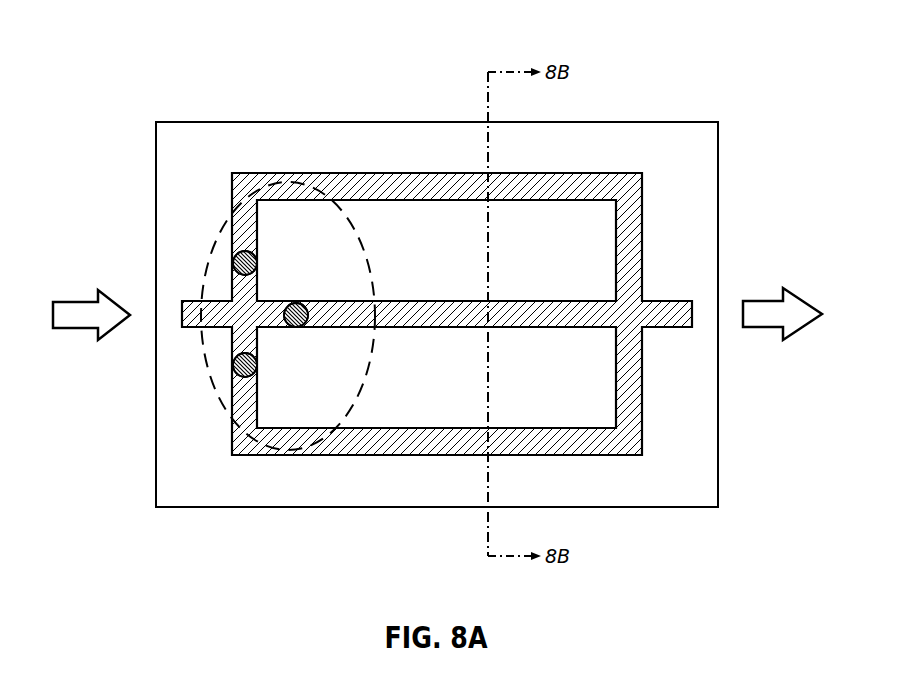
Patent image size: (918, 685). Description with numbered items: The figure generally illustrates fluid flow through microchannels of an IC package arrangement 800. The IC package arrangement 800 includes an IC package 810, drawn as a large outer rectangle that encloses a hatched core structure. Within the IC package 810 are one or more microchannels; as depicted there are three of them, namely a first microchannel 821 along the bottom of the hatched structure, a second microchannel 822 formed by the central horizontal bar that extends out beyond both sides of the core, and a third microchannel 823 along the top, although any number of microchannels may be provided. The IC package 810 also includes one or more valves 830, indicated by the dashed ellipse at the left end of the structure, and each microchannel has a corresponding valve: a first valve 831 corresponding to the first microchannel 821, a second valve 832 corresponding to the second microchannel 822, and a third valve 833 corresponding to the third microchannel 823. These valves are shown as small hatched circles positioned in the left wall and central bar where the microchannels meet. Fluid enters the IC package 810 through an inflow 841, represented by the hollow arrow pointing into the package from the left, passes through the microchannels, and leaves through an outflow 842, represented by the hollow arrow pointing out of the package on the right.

The IC package arrangement 800 is at (133, 51).
The IC package 810 is at (702, 130).
The first microchannel 821 is at (460, 456).
The second microchannel 822 is at (460, 328).
The third microchannel 823 is at (458, 201).
The valves 830 is at (226, 229).
The first valve 831 is at (258, 366).
The second valve 832 is at (305, 328).
The third valve 833 is at (258, 263).
The inflow 841 is at (76, 300).
The outflow 842 is at (760, 300).